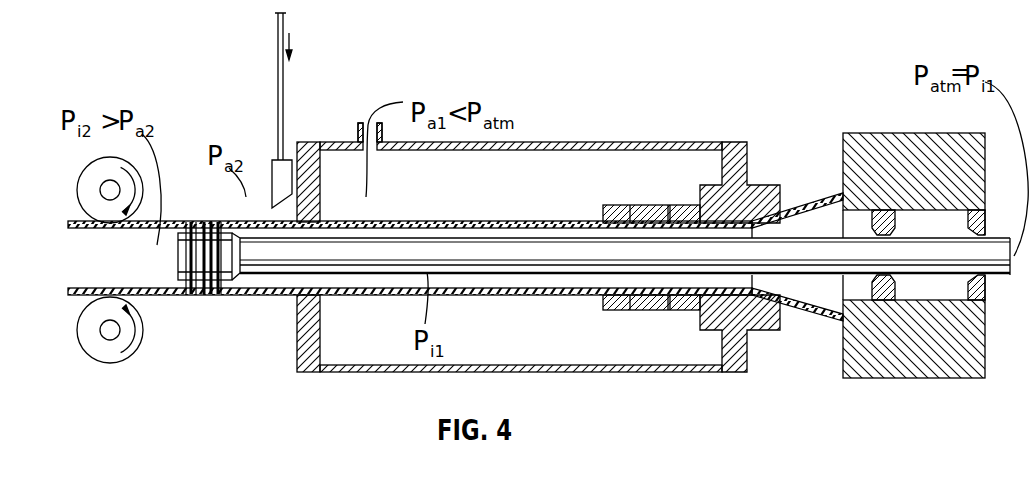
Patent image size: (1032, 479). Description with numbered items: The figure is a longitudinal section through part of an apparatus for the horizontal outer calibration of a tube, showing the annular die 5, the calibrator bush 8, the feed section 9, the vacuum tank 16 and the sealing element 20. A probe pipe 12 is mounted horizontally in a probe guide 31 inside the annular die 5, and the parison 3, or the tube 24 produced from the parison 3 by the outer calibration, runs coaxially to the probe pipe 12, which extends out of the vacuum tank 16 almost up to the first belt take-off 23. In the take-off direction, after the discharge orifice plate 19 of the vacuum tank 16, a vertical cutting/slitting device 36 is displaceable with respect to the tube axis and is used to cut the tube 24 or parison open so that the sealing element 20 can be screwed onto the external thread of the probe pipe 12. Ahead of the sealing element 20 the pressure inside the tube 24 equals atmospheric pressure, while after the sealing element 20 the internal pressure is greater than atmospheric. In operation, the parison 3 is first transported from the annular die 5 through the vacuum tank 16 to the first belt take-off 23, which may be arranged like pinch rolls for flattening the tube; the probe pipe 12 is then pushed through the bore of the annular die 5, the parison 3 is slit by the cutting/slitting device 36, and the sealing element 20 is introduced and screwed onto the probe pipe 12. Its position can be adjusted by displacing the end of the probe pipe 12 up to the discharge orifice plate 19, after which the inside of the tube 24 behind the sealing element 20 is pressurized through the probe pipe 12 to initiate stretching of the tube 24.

The parison 3 is at (812, 194).
The annular die 5 is at (918, 150).
The calibrator bush 8 is at (605, 211).
The feed section 9 is at (731, 162).
The probe pipe 12 is at (808, 254).
The vacuum tank 16 is at (560, 142).
The discharge orifice plate 19 is at (308, 166).
The sealing element 20 is at (224, 296).
The first belt take-off 23 is at (78, 190).
The tube 24 is at (567, 296).
The probe guide 31 is at (968, 217).
The cutting/slitting device 36 is at (276, 168).